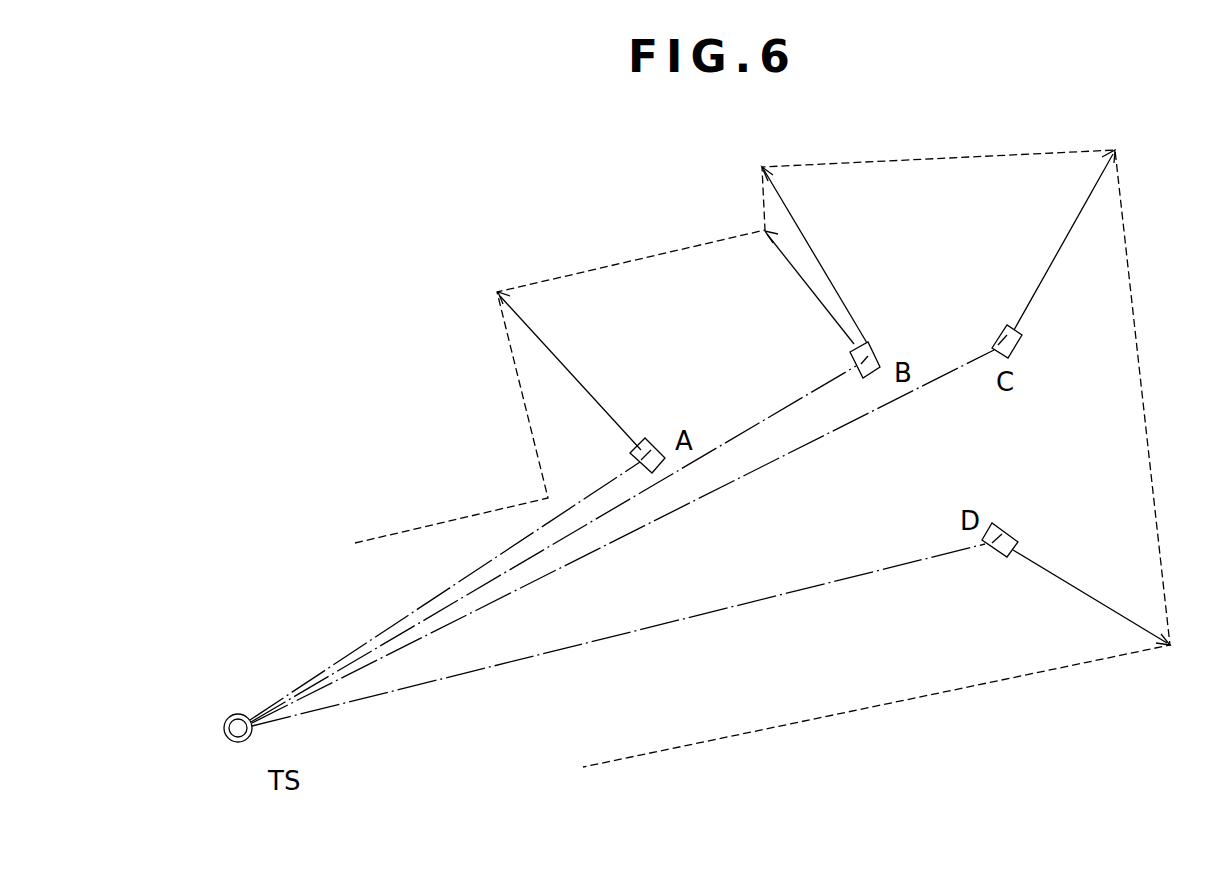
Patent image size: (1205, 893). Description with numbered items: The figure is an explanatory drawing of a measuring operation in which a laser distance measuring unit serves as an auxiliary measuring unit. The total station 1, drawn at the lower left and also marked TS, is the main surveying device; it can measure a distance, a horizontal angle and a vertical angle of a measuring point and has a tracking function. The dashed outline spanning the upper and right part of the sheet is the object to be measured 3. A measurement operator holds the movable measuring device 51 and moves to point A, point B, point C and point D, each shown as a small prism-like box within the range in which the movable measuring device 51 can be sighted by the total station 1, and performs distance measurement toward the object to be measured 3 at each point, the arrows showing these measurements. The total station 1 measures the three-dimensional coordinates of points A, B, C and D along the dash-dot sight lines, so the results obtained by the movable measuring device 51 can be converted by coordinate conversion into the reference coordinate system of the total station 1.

The total station 1 is at (232, 712).
The object to be measured 3 is at (852, 166).
The movable measuring device 51 is at (655, 442).